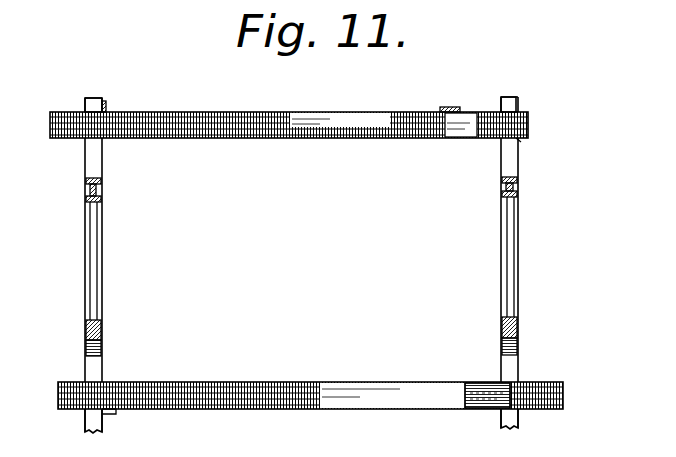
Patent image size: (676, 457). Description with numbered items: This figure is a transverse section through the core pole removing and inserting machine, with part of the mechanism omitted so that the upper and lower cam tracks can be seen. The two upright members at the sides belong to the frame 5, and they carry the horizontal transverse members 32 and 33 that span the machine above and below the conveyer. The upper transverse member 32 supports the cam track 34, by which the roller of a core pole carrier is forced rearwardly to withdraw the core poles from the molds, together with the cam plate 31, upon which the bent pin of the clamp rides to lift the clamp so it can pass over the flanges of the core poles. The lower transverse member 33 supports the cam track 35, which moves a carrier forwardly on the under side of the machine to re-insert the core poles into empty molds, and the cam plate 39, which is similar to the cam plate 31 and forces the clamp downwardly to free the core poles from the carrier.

The frame 5 is at (88, 255).
The cam plate 31 is at (497, 118).
The transverse member 32 is at (90, 98).
The cam track 33 is at (517, 139).
The cam track 34 is at (309, 131).
The cam track 35 is at (313, 399).
The cam plate 39 is at (498, 390).